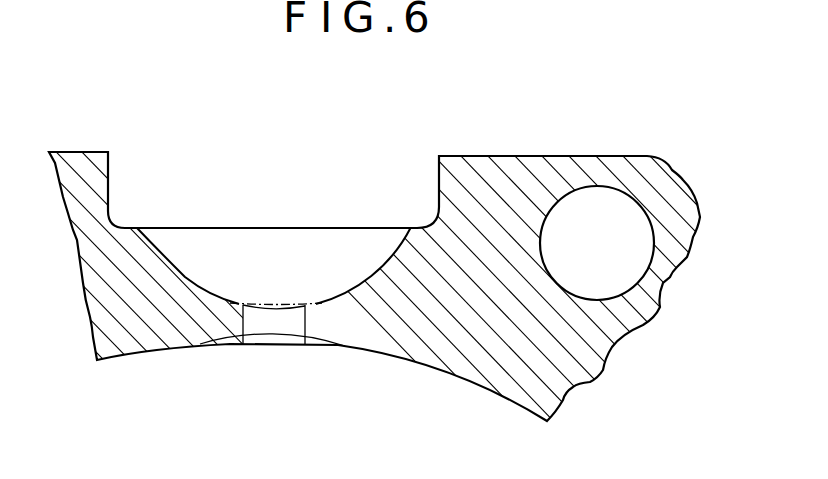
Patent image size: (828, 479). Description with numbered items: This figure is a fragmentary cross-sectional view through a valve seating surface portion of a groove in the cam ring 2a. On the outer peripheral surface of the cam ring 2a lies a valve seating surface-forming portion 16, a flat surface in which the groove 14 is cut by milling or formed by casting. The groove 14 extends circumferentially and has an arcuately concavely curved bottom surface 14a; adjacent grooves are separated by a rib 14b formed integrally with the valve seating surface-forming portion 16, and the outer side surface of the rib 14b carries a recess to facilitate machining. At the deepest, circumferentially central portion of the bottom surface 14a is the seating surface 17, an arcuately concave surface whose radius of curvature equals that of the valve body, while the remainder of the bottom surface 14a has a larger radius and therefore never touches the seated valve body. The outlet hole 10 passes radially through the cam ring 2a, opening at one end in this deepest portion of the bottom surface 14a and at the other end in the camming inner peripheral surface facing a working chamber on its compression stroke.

The cam ring 2a is at (657, 160).
The valve seating surface-forming portion 16 is at (557, 155).
The groove 14 is at (186, 236).
The rib 14b is at (240, 227).
The bottom surface 14a is at (338, 295).
The seating surface 17 is at (275, 304).
The outlet hole 10 is at (275, 325).